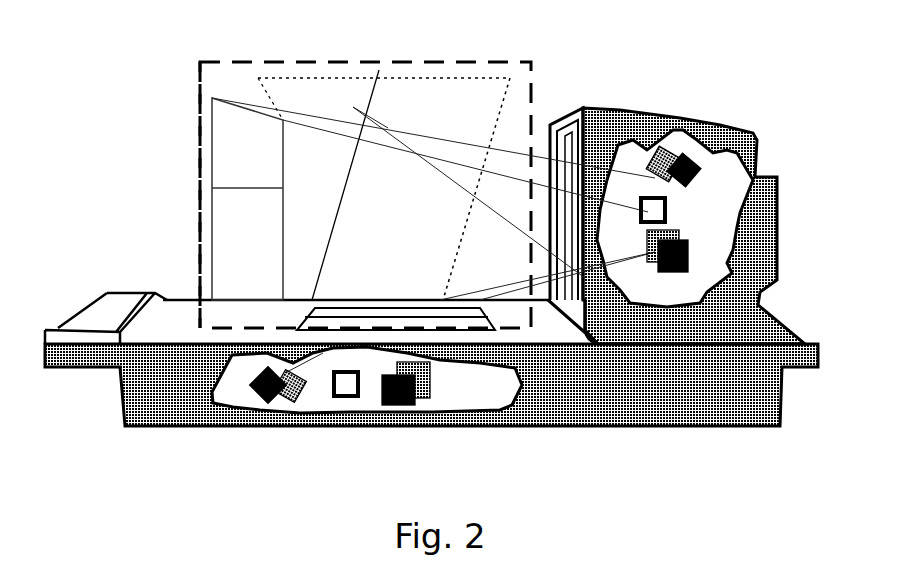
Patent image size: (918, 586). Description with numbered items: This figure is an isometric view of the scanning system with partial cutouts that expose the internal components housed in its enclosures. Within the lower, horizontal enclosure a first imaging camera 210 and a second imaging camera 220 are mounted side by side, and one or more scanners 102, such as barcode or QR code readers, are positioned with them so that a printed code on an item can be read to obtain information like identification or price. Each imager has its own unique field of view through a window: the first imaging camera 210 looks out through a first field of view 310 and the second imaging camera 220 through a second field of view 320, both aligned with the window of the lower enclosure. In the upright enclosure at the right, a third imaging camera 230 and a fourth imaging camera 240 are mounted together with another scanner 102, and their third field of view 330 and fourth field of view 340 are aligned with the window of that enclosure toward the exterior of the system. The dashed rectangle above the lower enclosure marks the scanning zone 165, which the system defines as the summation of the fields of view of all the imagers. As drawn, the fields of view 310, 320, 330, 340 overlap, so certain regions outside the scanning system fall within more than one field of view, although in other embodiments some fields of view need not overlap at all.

The scanner 102 is at (667, 212).
The scanning zone 165 is at (512, 62).
The first imaging camera 210 is at (277, 412).
The second imaging camera 220 is at (400, 425).
The third imaging camera 230 is at (690, 253).
The fourth imaging camera 240 is at (708, 132).
The first field of view 310 is at (379, 70).
The second field of view 320 is at (445, 77).
The third field of view 330 is at (220, 180).
The fourth field of view 340 is at (200, 238).